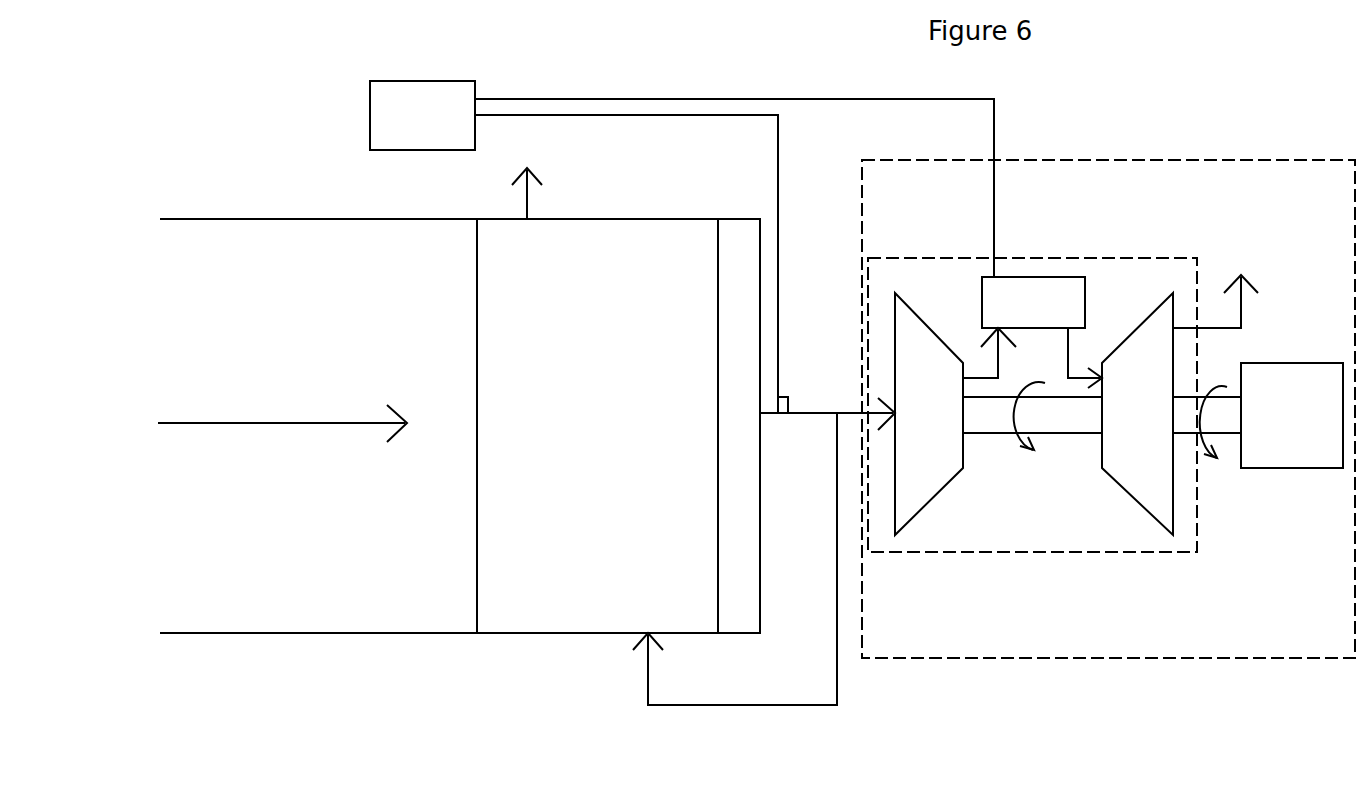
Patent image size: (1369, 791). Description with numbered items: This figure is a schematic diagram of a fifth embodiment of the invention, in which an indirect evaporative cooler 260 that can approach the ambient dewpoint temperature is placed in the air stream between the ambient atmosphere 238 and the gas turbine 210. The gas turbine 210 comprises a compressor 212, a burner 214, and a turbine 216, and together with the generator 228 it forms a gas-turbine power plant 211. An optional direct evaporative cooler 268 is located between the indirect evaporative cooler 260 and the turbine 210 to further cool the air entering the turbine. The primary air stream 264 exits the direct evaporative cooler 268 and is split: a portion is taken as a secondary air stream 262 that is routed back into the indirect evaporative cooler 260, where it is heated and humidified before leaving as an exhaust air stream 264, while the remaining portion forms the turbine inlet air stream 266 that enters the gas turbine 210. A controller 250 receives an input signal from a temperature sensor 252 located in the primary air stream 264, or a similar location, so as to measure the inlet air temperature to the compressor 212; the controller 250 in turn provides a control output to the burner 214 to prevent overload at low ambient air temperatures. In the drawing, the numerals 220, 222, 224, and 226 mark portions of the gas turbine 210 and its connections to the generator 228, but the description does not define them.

The gas turbine 210 is at (1102, 258).
The gas-turbine power plant 211 is at (1163, 658).
The compressor 212 is at (930, 468).
The burner 214 is at (1045, 277).
The turbine 216 is at (1138, 458).
The compressor discharge duct 220 is at (988, 378).
The combustor outlet duct 222 is at (1077, 378).
The shaft 224 is at (1007, 423).
The exhaust outlet 226 is at (1241, 310).
The generator 228 is at (1317, 430).
The ambient atmosphere 238 is at (96, 389).
The controller 250 is at (448, 140).
The temperature sensor 252 is at (783, 413).
The indirect evaporative cooler 260 is at (631, 436).
The secondary air stream 262 is at (703, 705).
The primary air stream 264 is at (532, 208).
The turbine inlet air stream 266 is at (855, 412).
The direct evaporative cooler 268 is at (742, 260).